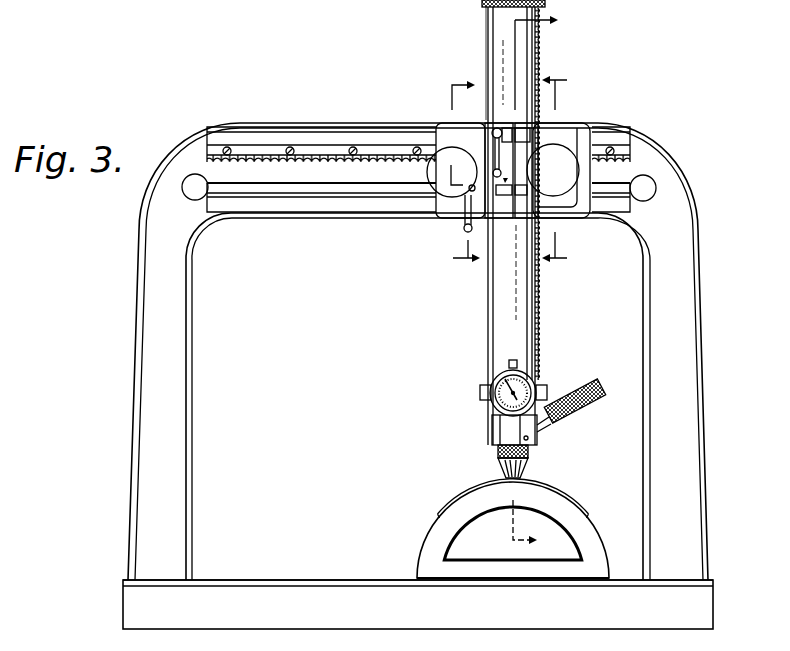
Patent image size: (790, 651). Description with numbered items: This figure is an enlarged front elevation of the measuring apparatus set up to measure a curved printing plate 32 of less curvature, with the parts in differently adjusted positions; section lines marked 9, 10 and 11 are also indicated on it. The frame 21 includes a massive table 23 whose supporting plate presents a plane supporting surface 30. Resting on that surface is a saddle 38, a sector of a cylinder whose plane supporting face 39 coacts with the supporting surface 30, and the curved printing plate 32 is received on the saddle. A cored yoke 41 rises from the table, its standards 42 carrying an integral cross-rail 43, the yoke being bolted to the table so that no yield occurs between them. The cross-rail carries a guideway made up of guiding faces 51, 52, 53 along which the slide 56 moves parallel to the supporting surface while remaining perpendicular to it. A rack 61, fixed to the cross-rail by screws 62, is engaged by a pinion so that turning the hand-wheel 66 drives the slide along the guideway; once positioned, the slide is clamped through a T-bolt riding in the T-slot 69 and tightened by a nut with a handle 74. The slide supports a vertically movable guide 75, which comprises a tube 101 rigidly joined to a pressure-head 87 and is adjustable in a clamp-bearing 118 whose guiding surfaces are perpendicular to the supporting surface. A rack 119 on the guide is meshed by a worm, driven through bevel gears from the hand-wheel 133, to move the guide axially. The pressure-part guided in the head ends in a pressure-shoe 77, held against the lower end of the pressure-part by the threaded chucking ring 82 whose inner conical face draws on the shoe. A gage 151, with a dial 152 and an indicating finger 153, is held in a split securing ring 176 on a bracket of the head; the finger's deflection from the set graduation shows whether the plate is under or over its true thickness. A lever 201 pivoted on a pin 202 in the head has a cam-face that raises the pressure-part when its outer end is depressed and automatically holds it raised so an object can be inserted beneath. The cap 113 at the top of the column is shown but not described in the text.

The frame 21 is at (114, 594).
The table 23 is at (168, 603).
The supporting surface 30 is at (308, 580).
The curved printing plate 32 is at (452, 500).
The saddle 38 is at (440, 533).
The supporting face 39 is at (493, 581).
The yoke 41 is at (179, 134).
The standards 42 is at (153, 418).
The cross-rail 43 is at (332, 170).
The guiding face 51 is at (283, 132).
The guiding face 52 is at (384, 140).
The guiding face 53 is at (302, 210).
The slide 56 is at (432, 124).
The rack 61 is at (312, 150).
The screws 62 is at (229, 148).
The hand-wheel 66 is at (455, 162).
The T-slot 69 is at (235, 186).
The handle 74 is at (463, 208).
The guide 75 is at (481, 22).
The pressure-shoe 77 is at (505, 472).
The chucking ring 82 is at (528, 452).
The pressure-head 87 is at (490, 430).
The tube 101 is at (507, 40).
The column end cap 113 is at (550, 3).
The clamp-bearing 118 is at (530, 152).
The rack 119 is at (541, 55).
The hand-wheel 133 is at (553, 160).
The gage 151 is at (525, 372).
The dial 152 is at (506, 396).
The indicating finger 153 is at (492, 388).
The split securing ring 176 is at (508, 368).
The lever 201 is at (598, 400).
The pin 202 is at (530, 440).
The section line 9- 9 is at (545, 284).
The section line 10- 10 is at (569, 173).
The section line 11- 11 is at (454, 169).